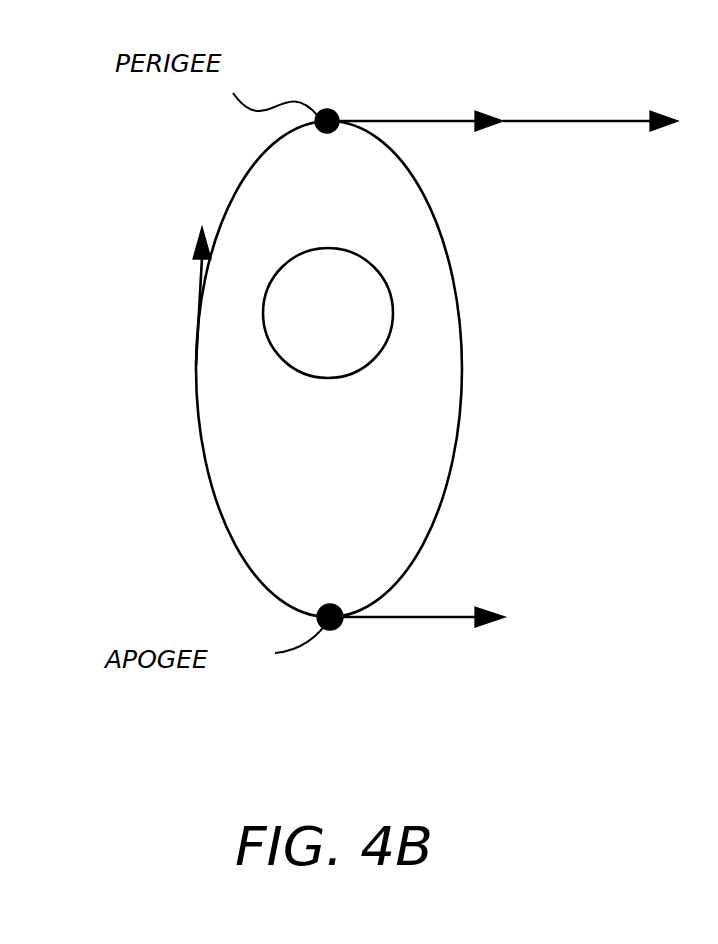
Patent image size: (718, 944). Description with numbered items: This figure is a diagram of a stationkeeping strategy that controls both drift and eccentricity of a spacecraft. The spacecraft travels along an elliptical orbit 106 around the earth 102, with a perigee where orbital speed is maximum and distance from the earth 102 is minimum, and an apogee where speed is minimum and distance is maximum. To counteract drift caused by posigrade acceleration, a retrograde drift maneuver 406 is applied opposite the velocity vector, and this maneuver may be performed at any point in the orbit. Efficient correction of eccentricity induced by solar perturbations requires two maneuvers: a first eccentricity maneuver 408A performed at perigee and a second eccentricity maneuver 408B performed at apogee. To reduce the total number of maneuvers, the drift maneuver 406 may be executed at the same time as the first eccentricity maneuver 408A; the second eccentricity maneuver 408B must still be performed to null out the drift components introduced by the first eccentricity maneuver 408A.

The earth 102 is at (360, 367).
The elliptical orbit 106 is at (228, 195).
The drift maneuver ΔV 406 is at (445, 121).
The first eccentricity maneuver δΔV 408A is at (557, 121).
The second eccentricity maneuver δΔV 408B is at (442, 617).